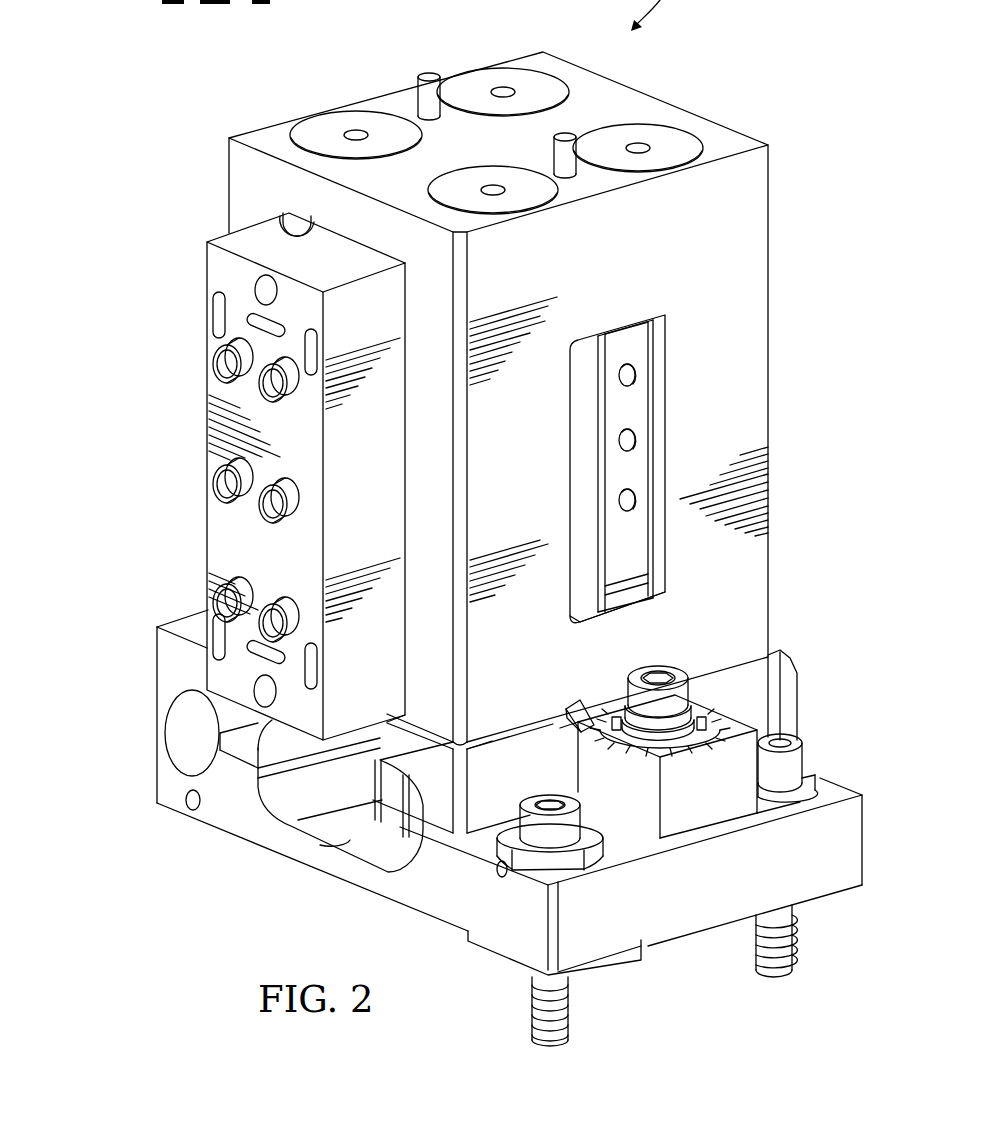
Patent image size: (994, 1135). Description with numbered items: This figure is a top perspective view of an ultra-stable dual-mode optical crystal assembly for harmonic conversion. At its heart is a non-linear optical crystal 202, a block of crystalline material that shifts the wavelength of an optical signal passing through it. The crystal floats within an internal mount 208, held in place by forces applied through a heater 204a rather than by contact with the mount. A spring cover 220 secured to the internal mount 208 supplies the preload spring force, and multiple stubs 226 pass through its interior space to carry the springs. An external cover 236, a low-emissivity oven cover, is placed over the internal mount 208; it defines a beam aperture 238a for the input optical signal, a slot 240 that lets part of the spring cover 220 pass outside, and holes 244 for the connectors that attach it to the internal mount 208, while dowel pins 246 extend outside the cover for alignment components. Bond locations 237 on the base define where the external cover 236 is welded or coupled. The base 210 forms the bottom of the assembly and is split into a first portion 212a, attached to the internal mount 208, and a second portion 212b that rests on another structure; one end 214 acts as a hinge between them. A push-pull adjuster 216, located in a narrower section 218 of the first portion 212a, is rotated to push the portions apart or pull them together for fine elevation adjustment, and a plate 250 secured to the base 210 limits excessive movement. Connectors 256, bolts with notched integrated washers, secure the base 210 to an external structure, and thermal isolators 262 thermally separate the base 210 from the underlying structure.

The non-linear optical crystal 202 is at (585, 362).
The heater 204a is at (390, 871).
The internal mount 208 is at (584, 606).
The base 210 is at (812, 922).
The first portion of the base 212a is at (798, 664).
The second portion of the base 212b is at (672, 926).
The end of the base 214 is at (158, 713).
The push-pull adjuster 216 is at (668, 698).
The narrower section of the first portion 218 is at (728, 803).
The spring cover 220 is at (207, 276).
The stubs 226 is at (214, 365).
The external cover 236 is at (770, 201).
The bond locations 237 is at (574, 698).
The beam aperture 238a is at (660, 392).
The slot 240 is at (285, 230).
The holes 244 is at (639, 145).
The dowel pins 246 is at (426, 94).
The plate 250 is at (797, 722).
The connectors 256 is at (538, 800).
The thermal isolators 262 is at (500, 958).